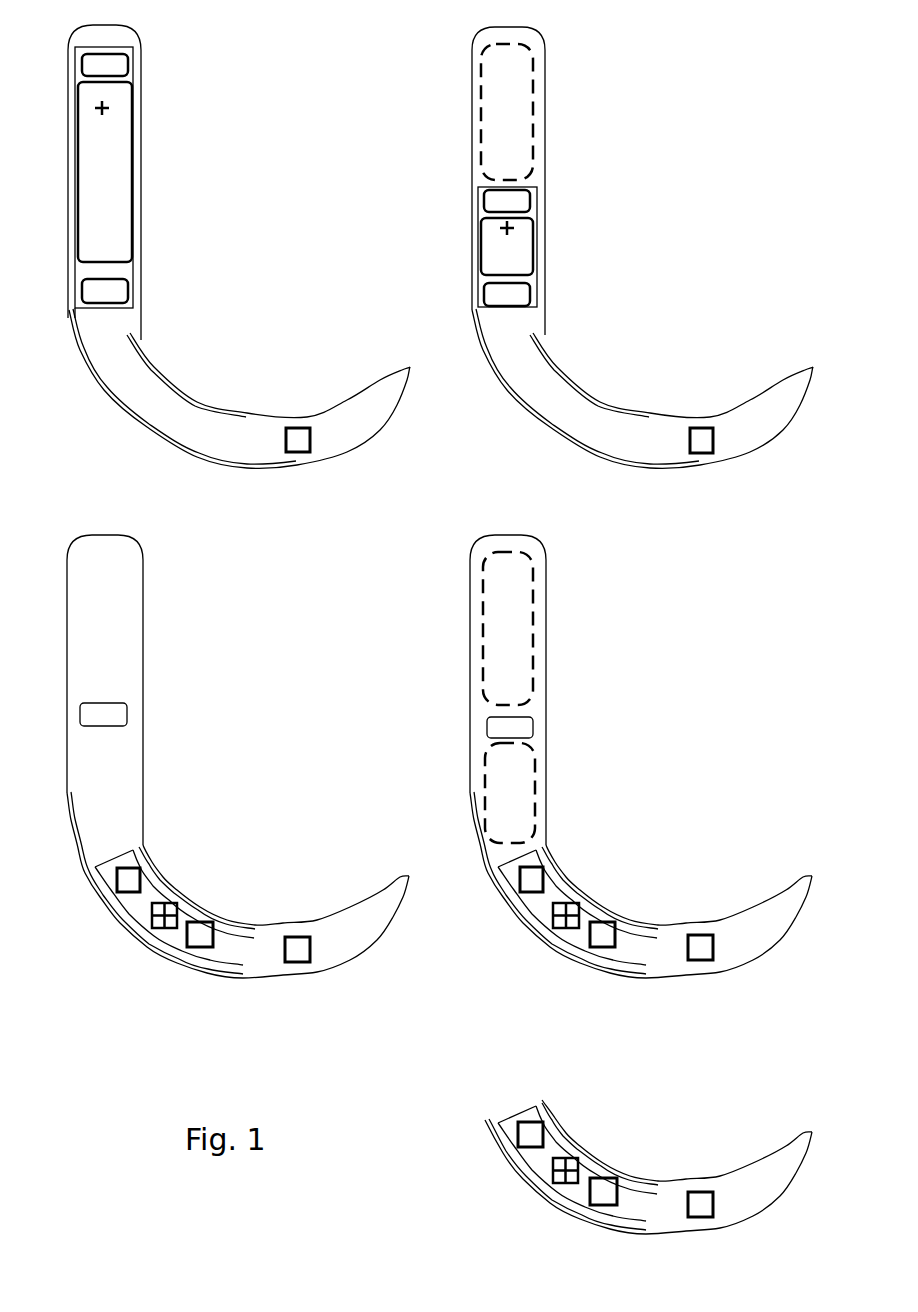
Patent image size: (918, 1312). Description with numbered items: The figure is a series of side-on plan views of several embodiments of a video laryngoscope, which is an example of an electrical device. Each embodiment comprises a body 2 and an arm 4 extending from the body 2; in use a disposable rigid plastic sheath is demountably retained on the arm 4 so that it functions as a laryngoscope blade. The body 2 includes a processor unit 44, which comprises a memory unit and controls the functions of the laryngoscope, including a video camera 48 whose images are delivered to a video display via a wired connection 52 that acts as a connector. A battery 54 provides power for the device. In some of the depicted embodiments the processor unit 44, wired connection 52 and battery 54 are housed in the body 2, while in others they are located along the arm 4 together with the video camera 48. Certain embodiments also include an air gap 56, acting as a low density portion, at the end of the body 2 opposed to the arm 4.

The body 2 is at (468, 70).
The arm 4 is at (412, 375).
The processor unit 44 is at (497, 297).
The video camera 48 is at (697, 443).
The wired connection 52 is at (487, 200).
The battery 54 is at (493, 253).
The air gap 56 is at (518, 118).